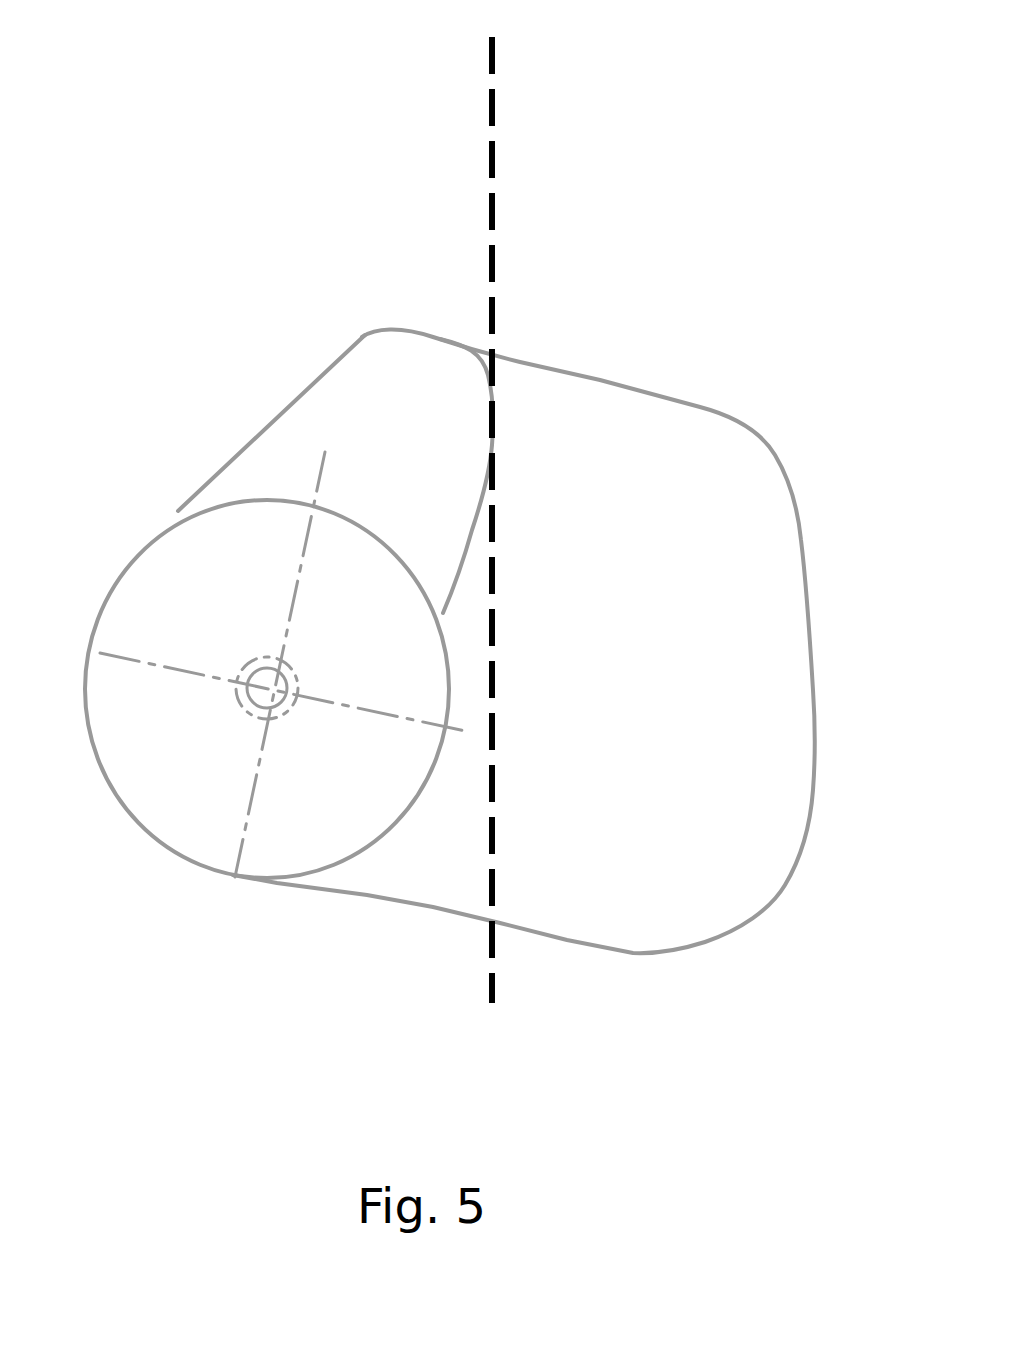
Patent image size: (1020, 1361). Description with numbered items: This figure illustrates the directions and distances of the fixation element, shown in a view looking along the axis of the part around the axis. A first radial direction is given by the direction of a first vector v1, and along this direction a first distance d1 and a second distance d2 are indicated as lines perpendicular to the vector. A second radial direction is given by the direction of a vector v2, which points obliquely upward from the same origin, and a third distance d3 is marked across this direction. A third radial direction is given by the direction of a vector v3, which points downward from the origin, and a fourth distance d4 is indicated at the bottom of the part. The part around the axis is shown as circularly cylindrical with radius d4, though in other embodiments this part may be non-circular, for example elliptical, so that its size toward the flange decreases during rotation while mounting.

The first vector v1 is at (270, 690).
The first vector v2 is at (270, 690).
The first vector v3 is at (270, 690).
The first distance d1 is at (451, 628).
The second distance d2 is at (576, 553).
The third distance d3 is at (543, 470).
The fourth distance d4 is at (398, 877).